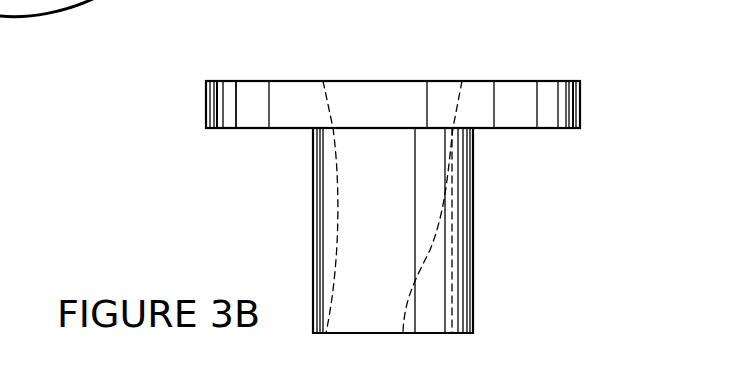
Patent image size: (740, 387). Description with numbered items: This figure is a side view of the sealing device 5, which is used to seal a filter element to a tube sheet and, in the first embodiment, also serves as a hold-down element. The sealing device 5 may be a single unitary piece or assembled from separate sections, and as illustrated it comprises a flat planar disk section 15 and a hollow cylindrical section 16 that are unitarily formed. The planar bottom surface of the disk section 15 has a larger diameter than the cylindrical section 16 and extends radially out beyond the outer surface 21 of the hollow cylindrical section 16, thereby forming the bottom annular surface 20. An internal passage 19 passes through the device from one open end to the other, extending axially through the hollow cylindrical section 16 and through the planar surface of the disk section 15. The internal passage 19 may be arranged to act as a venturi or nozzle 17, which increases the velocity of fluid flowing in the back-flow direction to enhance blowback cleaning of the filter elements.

The sealing device 5 is at (583, 100).
The disk section 15 is at (245, 80).
The internal passage 19 is at (380, 80).
The hollow cylindrical section 16 is at (313, 240).
The nozzle 17 is at (403, 333).
The bottom annular surface 20 is at (555, 129).
The outer surface 21 is at (476, 130).